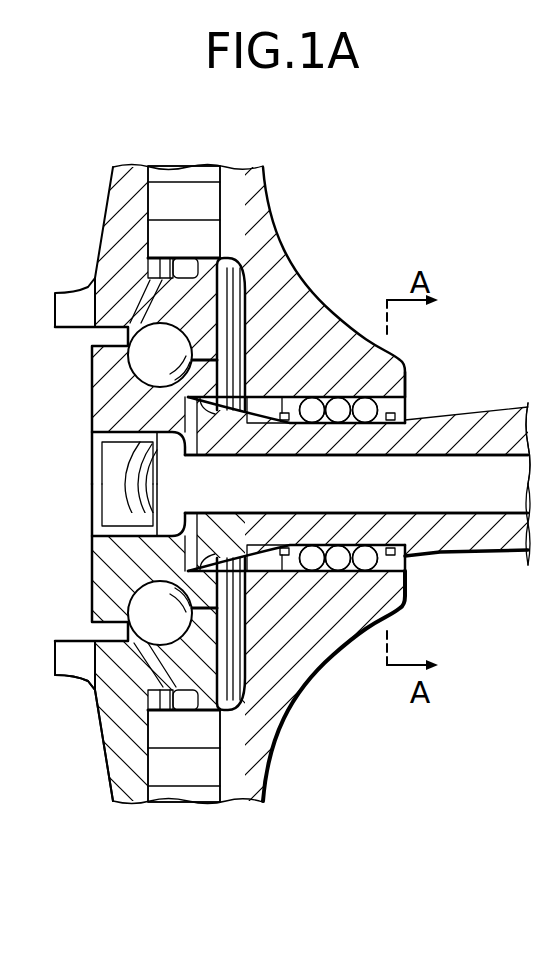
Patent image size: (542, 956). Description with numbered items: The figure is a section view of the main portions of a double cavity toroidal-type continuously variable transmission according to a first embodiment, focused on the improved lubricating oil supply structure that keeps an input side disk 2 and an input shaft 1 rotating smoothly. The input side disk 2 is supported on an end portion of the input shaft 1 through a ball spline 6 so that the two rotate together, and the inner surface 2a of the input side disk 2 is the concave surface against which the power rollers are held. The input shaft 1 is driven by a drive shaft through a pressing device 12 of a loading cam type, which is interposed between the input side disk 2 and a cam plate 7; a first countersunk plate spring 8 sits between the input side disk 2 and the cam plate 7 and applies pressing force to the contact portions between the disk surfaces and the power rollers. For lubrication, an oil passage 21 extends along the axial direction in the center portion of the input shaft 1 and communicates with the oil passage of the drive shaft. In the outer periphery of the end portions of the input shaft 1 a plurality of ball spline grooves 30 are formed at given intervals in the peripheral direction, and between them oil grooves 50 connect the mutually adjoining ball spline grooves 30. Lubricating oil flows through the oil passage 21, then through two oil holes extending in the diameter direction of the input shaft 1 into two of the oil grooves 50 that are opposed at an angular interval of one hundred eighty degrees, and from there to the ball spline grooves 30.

The input shaft 1 is at (497, 430).
The input side disk 2 is at (337, 635).
The inner surface (concave surface) of input side disk 2a is at (347, 328).
The ball spline 6 is at (338, 415).
The cam plate 7 is at (112, 713).
The first countersunk plate spring 8 is at (280, 718).
The pressing device 12 is at (164, 209).
The oil passage 21 is at (486, 507).
The ball spline grooves 30 is at (408, 412).
The oil grooves 50 is at (283, 398).